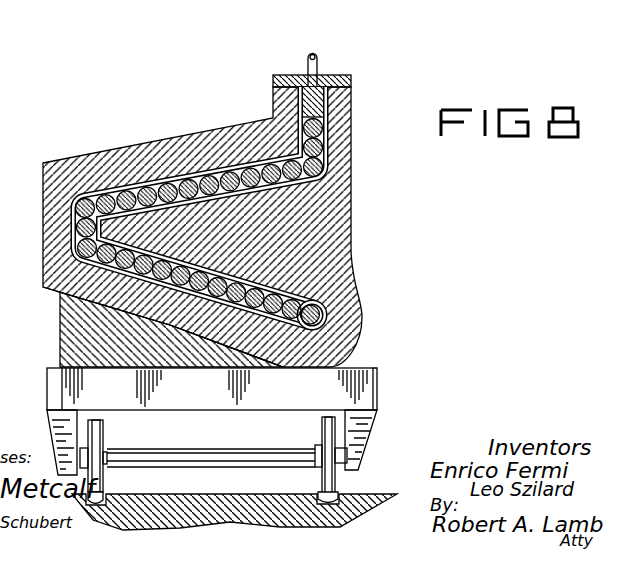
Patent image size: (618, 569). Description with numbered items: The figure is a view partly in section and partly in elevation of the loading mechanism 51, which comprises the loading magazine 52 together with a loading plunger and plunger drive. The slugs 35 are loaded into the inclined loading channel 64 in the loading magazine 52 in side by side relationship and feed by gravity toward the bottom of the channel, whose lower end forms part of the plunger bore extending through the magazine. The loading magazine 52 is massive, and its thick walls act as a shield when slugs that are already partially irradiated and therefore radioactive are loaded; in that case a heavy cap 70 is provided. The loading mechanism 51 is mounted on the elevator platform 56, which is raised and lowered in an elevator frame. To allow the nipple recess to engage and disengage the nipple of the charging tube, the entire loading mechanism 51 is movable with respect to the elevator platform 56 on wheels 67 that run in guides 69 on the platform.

The slugs 35 is at (118, 197).
The loading mechanism 51 is at (357, 228).
The loading magazine 52 is at (343, 147).
The elevator platform 56 is at (228, 493).
The loading channel 64 is at (152, 183).
The wheels 67 is at (102, 443).
The guides 69 is at (105, 495).
The heavy cap 70 is at (333, 80).